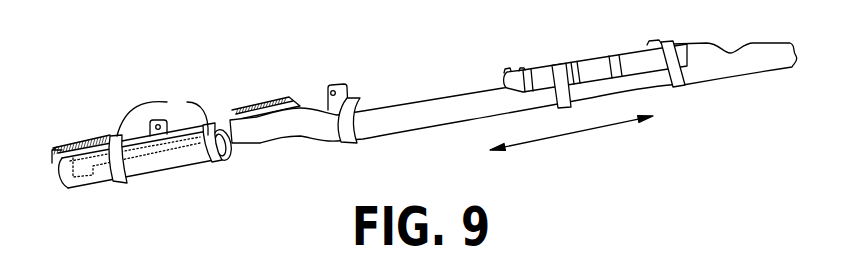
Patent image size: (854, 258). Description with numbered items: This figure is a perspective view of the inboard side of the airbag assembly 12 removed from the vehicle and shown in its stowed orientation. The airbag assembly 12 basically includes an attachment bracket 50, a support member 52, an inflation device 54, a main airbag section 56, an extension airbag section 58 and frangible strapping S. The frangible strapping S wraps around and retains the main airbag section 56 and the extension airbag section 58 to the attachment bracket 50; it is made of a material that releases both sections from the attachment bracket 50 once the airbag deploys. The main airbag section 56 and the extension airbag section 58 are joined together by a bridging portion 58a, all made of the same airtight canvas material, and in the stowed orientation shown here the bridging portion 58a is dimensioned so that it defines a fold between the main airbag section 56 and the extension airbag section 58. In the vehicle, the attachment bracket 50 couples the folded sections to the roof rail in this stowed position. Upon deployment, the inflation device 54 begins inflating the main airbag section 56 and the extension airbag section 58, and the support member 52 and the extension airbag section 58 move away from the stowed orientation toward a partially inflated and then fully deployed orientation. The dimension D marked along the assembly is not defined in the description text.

The airbag assembly 12 is at (333, 68).
The attachment bracket 50 is at (104, 137).
The support member 52 is at (133, 158).
The inflation device 54 is at (592, 68).
The main airbag section 56 is at (390, 122).
The extension airbag section 58 is at (187, 162).
The bridging portion 58a is at (62, 168).
The frangible strapping S is at (162, 114).
The distance D is at (575, 131).